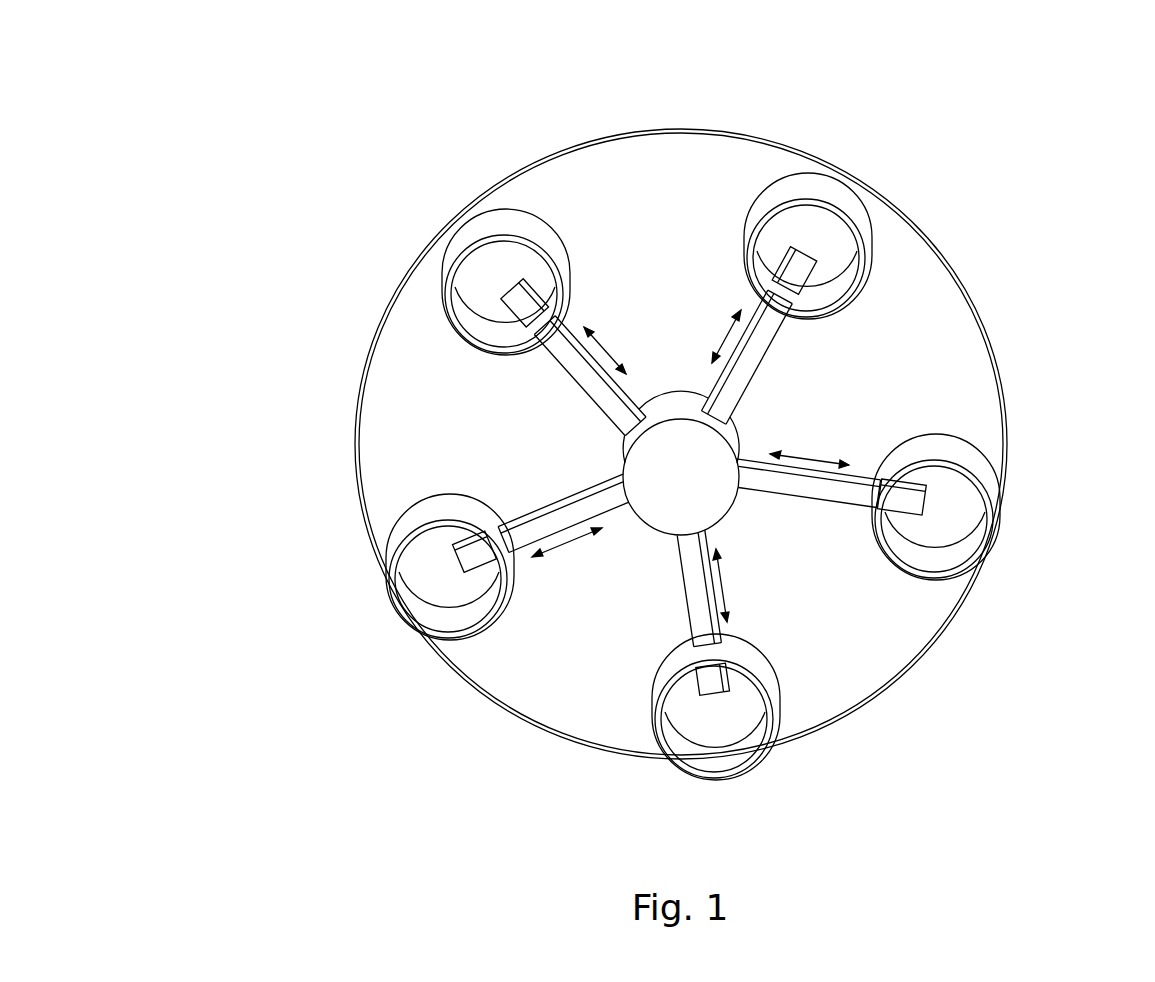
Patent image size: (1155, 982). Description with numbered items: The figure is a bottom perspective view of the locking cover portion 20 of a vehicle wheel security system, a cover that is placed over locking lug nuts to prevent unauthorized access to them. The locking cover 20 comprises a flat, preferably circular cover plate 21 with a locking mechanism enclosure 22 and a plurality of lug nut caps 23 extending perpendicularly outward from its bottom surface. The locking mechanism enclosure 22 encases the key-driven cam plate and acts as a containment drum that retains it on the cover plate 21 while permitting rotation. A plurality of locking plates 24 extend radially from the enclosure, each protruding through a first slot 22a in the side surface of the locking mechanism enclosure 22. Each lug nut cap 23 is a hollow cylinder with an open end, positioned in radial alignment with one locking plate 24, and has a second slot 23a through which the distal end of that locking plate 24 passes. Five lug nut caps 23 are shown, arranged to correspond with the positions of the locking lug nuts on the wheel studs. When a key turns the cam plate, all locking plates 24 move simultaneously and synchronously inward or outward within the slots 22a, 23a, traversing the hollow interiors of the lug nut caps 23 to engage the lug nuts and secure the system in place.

The locking cover portion 20 is at (158, 158).
The cover plate 21 is at (591, 192).
The locking mechanism enclosure 22 is at (718, 487).
The first slots 22a is at (700, 404).
The lug nut caps 23 is at (477, 233).
The second slot 23a is at (783, 295).
The locking plates 24 is at (775, 343).